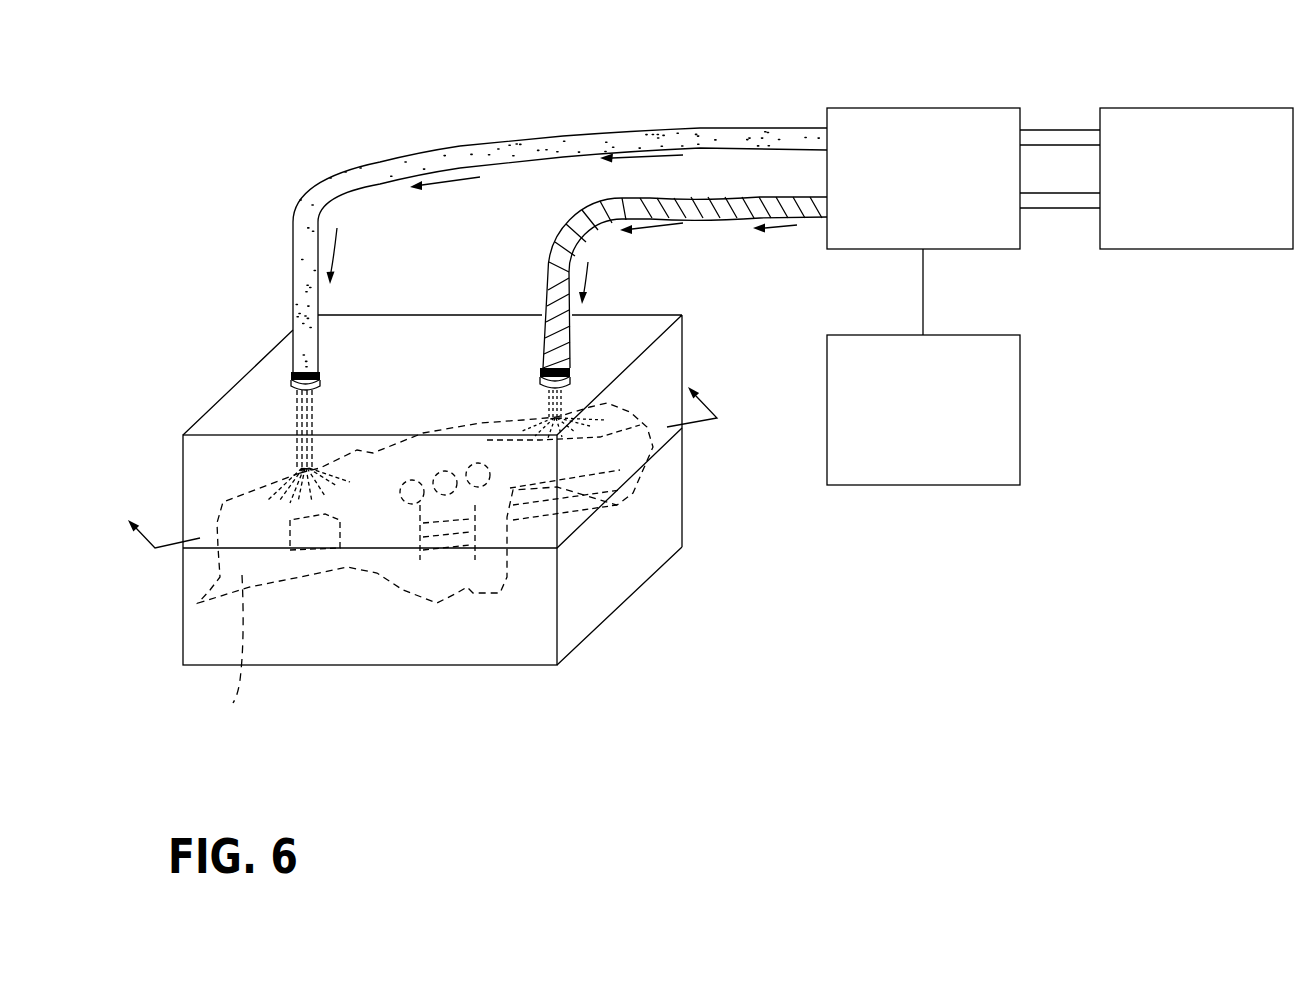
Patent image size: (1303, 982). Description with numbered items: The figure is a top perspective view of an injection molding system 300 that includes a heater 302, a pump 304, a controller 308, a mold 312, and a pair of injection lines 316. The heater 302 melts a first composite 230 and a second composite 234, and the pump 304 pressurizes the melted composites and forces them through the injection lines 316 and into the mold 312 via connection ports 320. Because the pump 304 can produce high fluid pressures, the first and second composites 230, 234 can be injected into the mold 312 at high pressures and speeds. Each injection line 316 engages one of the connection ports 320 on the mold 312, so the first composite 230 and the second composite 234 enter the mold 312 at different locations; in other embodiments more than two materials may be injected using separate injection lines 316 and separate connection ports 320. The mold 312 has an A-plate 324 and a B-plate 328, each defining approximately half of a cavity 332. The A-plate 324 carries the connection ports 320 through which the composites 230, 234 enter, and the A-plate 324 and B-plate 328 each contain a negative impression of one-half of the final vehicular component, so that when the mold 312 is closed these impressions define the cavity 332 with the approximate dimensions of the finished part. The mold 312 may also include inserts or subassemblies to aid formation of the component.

The injection molding system 300 is at (278, 72).
The heater 302 is at (1185, 195).
The pump 304 is at (911, 195).
The controller 308 is at (911, 428).
The first composite 230 is at (602, 140).
The second composite 234 is at (700, 207).
The injection lines 316 is at (473, 147).
The connection ports 320 is at (295, 380).
The mold 312 is at (427, 490).
The A-plate 324 is at (195, 467).
The B-plate 328 is at (200, 605).
The cavity 332 is at (228, 656).